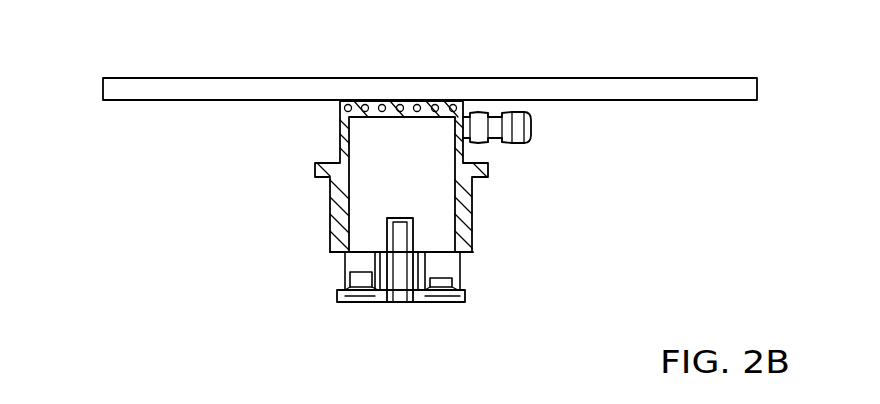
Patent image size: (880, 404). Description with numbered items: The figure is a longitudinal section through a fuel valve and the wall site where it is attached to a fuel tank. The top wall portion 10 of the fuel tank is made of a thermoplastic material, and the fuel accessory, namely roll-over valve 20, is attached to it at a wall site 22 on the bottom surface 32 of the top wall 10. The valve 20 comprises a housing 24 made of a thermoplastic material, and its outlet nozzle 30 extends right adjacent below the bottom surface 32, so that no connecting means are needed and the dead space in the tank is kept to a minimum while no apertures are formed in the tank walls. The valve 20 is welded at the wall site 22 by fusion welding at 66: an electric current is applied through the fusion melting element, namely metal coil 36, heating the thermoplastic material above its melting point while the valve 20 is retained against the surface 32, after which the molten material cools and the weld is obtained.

The top wall portion 10 is at (147, 93).
The roll-over valve 20 is at (404, 169).
The wall site 22 is at (336, 107).
The housing 24 is at (358, 205).
The outlet nozzle 30 is at (527, 135).
The bottom surface 32 is at (652, 100).
The metal coil 36 is at (371, 102).
The fusion welding 66 is at (442, 102).